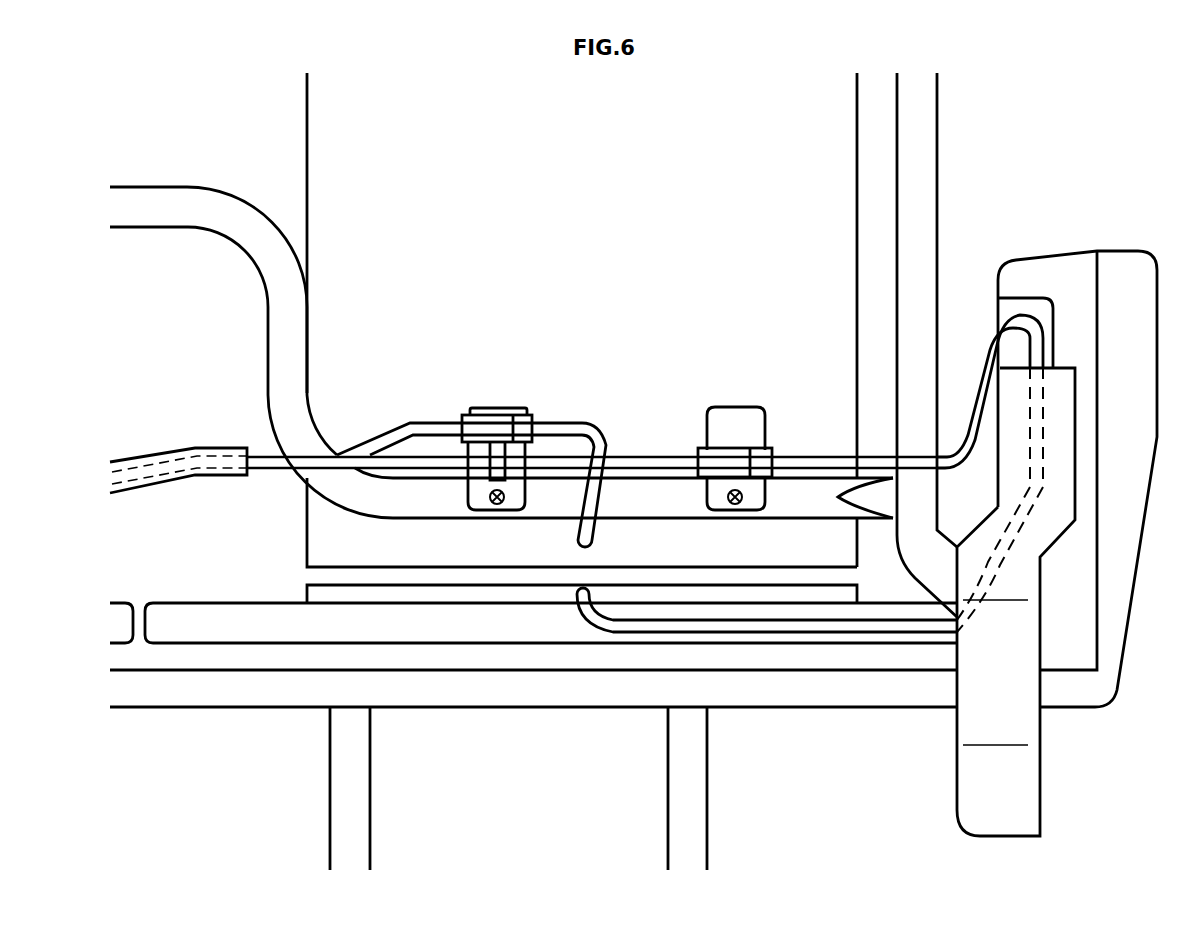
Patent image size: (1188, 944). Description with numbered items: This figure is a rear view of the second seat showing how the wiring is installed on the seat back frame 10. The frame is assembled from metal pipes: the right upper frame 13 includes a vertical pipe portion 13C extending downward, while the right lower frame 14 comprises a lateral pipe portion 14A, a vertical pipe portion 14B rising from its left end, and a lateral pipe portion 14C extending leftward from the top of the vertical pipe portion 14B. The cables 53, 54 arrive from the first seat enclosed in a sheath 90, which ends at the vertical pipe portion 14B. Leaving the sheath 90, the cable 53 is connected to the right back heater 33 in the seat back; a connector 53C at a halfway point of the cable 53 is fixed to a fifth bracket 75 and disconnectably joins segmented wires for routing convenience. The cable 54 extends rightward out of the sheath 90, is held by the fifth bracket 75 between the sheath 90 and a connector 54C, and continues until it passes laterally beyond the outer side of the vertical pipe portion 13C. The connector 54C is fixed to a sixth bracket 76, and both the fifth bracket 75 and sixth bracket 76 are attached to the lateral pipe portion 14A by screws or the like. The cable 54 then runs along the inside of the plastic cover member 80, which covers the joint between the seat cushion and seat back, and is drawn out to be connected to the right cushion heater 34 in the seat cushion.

The seat back frame 10 is at (968, 122).
The right upper frame 13 is at (937, 152).
The vertical pipe portion 13C is at (923, 193).
The right lower frame 14 is at (501, 346).
The lateral pipe portion 14A is at (662, 505).
The vertical pipe portion 14B is at (277, 360).
The lateral pipe portion 14C is at (148, 193).
The right back heater 33 is at (510, 552).
The right cushion heater 34 is at (553, 598).
The cable 53 is at (417, 421).
The connector 53C is at (502, 422).
The cable 54 is at (808, 634).
The connector 54C is at (732, 447).
The fifth bracket 75 is at (480, 498).
The sixth bracket 76 is at (755, 500).
The cover member 80 is at (1066, 254).
The sheath 90 is at (168, 467).